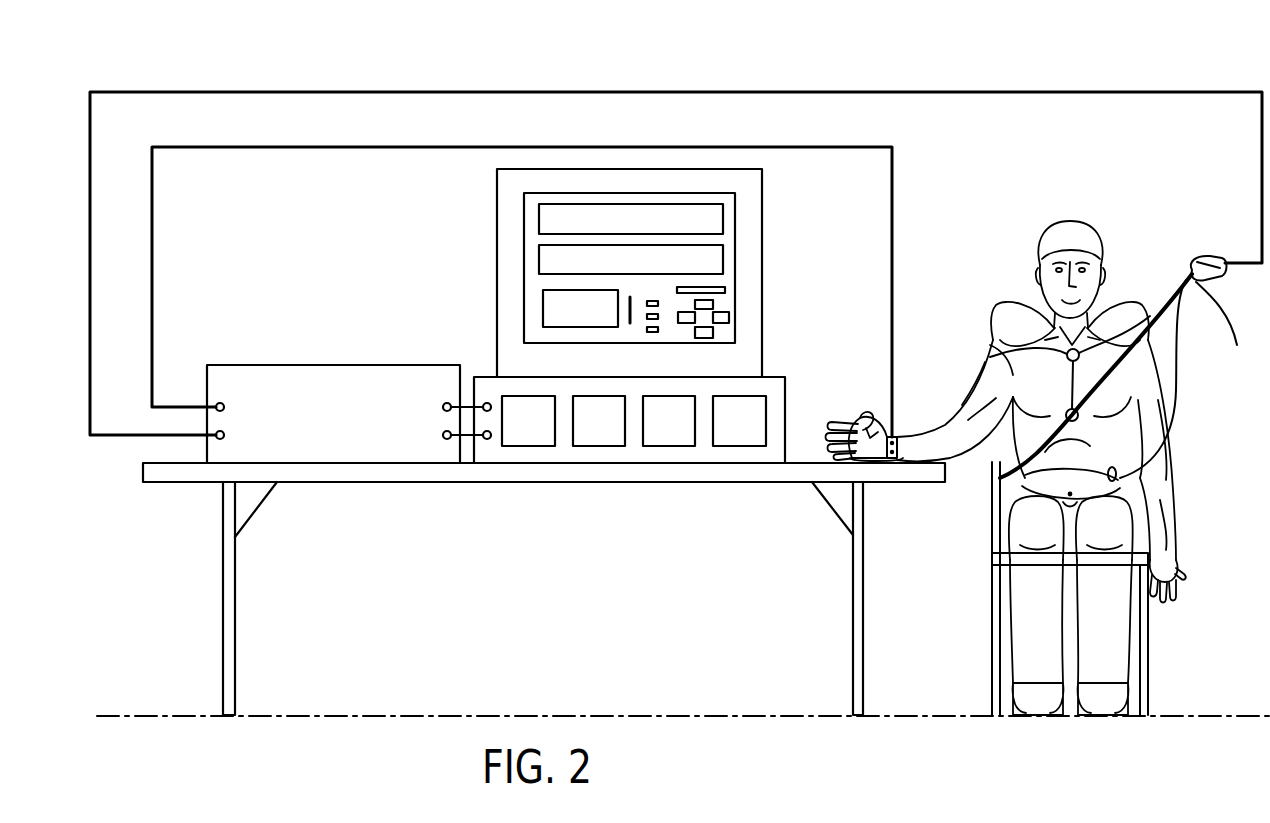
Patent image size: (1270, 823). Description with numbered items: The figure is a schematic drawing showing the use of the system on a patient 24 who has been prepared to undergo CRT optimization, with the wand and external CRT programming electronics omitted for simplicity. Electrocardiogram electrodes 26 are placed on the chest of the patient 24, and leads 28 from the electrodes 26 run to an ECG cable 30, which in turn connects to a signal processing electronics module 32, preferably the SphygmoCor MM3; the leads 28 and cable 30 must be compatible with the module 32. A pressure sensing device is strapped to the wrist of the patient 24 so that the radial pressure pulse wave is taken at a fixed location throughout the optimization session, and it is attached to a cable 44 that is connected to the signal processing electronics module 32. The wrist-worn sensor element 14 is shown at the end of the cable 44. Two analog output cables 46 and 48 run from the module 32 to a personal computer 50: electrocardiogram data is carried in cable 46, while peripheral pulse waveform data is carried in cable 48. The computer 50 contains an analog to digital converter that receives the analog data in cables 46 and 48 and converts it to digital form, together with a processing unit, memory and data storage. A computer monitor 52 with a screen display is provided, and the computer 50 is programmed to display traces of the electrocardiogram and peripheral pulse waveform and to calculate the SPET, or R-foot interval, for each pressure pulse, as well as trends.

The wrist band electrode 14 is at (897, 438).
The patient 24 is at (1069, 206).
The electrocardiogram electrodes 26 is at (990, 357).
The leads 28 is at (1170, 292).
The ECG cable 30 is at (303, 92).
The signal processing electronics module 32 is at (337, 365).
The cable 44 is at (418, 147).
The analog output cable 46 is at (466, 420).
The analog output cable 48 is at (466, 420).
The personal computer 50 is at (785, 417).
The computer monitor 52 is at (735, 266).